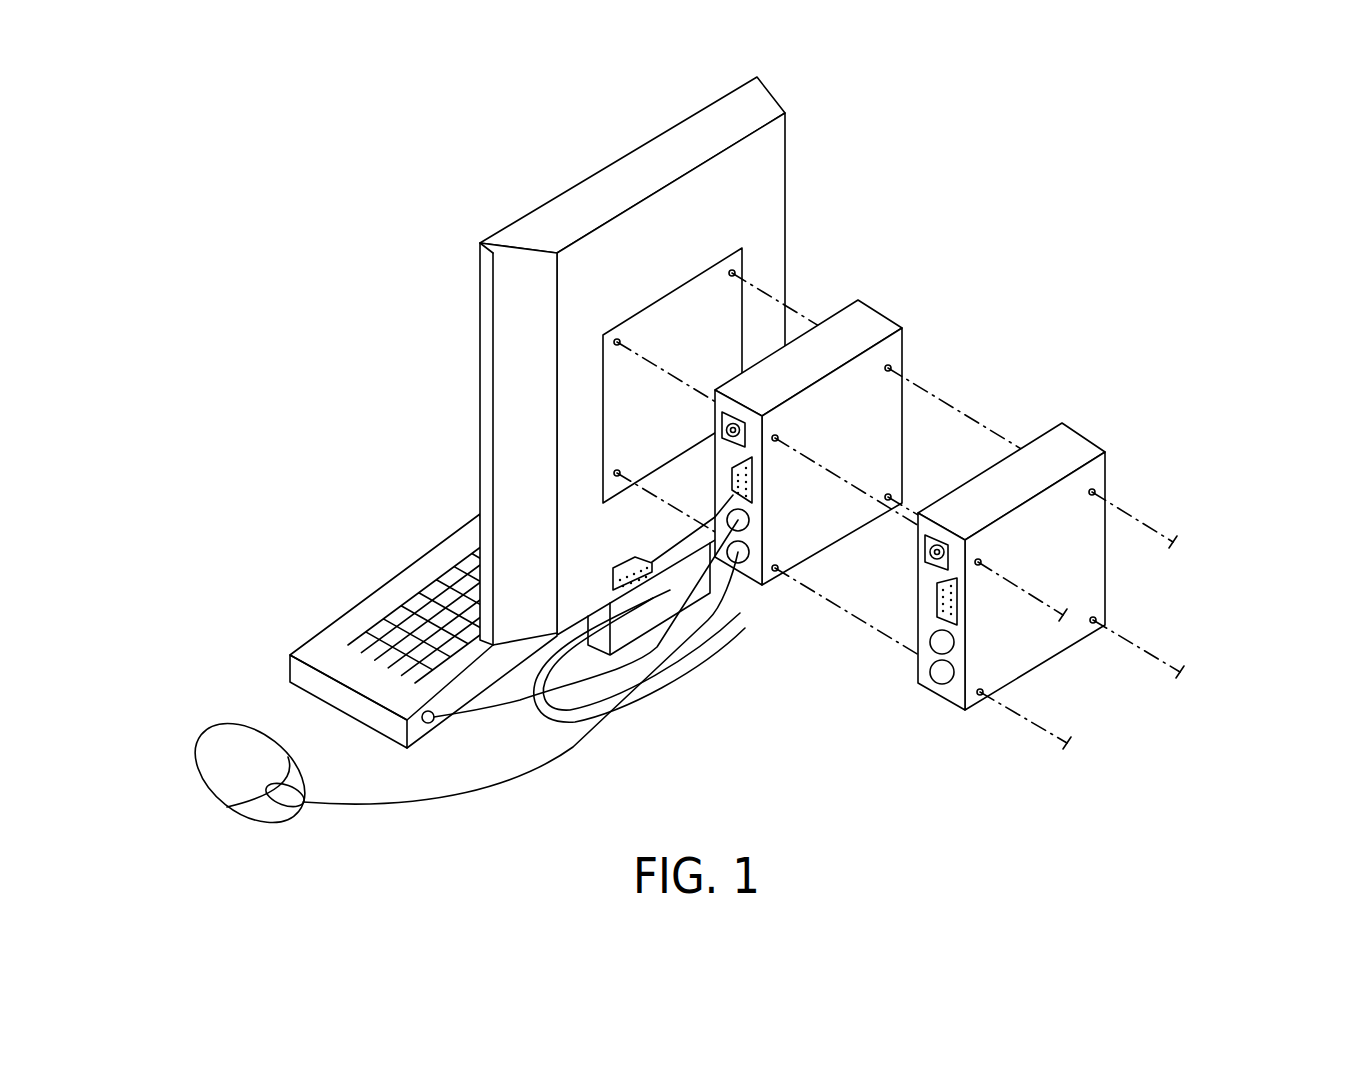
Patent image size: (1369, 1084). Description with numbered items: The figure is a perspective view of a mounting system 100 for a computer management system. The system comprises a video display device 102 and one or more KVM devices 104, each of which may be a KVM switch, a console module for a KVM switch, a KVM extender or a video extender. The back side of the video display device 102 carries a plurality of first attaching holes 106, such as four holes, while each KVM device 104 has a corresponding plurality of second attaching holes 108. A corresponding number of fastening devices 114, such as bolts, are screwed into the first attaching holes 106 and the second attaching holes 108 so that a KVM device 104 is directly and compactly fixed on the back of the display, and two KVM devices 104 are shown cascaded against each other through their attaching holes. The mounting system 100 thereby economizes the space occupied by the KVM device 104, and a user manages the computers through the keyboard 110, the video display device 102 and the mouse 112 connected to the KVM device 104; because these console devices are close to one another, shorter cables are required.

The mounting system 100 is at (699, 443).
The video display device 102 is at (753, 97).
The KVM device 104 is at (860, 318).
The first attaching holes 106 is at (740, 270).
The second attaching holes 108 is at (751, 419).
The keyboard 110 is at (325, 647).
The mouse 112 is at (238, 757).
The fastening devices 114 is at (1165, 540).